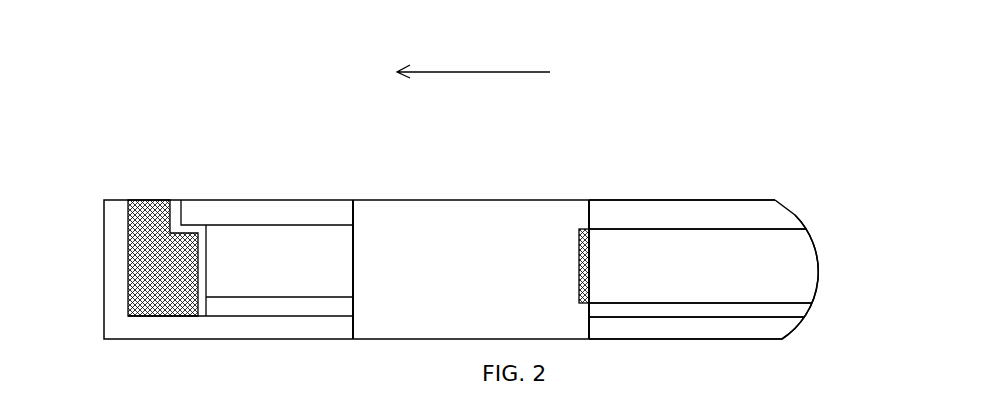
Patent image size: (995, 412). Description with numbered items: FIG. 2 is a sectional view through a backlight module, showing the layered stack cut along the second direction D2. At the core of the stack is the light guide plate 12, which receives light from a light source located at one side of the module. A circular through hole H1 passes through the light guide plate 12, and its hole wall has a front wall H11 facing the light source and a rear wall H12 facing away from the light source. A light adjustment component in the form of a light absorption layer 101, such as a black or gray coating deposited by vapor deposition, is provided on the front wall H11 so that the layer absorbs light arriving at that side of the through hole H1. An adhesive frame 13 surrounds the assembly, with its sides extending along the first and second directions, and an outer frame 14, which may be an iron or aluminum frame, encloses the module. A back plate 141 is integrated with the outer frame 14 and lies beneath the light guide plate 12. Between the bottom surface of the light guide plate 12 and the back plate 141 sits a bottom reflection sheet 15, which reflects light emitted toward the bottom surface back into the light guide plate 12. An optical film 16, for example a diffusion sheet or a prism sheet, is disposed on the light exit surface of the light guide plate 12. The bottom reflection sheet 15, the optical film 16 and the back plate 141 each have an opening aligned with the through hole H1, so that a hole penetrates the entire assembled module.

The second direction D2 is at (473, 54).
The outer frame 14 is at (112, 218).
The adhesive frame 13 is at (165, 202).
The light guide plate 12 is at (282, 255).
The rear wall H12 is at (352, 278).
The through hole H1 is at (455, 252).
The light absorption layer 101 is at (579, 260).
The front wall H11 is at (590, 262).
The optical film 16 is at (640, 217).
The bottom reflection sheet 15 is at (707, 312).
The back plate 141 is at (762, 335).